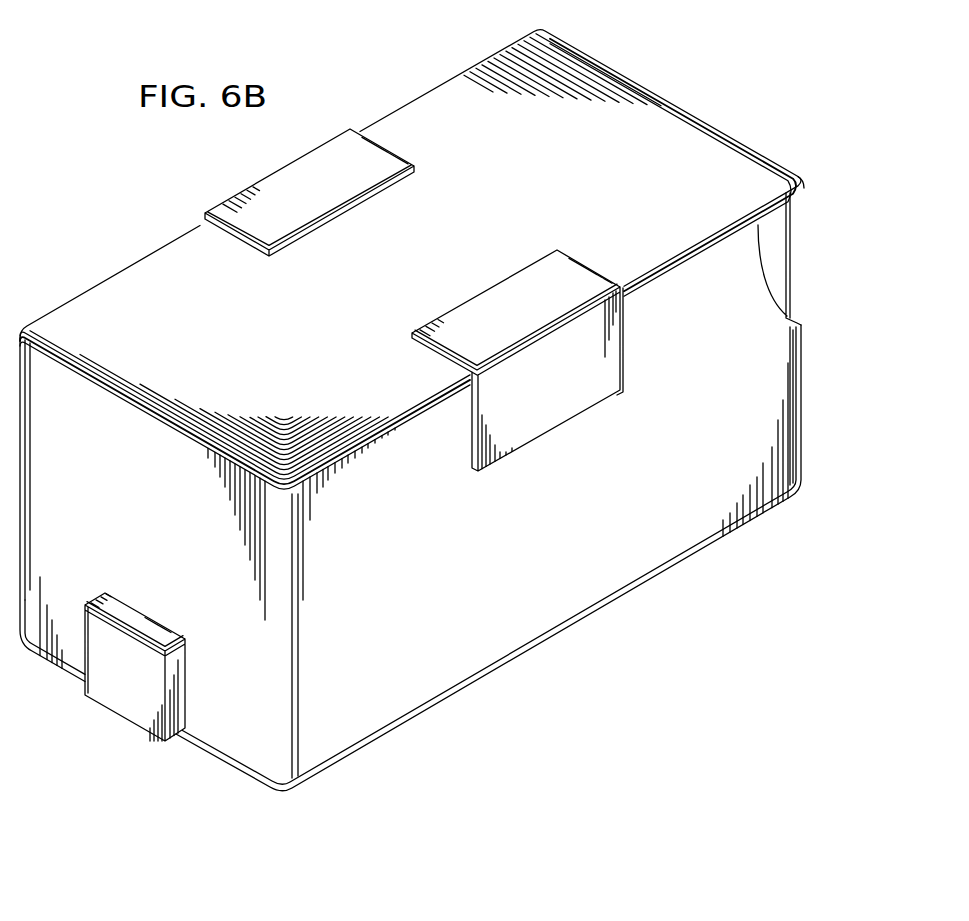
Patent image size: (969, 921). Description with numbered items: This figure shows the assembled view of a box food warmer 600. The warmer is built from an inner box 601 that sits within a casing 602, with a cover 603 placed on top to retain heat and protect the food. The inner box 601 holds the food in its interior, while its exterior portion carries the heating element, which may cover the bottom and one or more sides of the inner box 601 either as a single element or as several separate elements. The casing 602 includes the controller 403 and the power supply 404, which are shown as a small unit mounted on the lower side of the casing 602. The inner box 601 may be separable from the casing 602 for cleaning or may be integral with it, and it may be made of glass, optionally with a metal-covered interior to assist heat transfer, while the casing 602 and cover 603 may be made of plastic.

The box food warmer 600 is at (778, 88).
The inner box 601 is at (790, 258).
The casing 602 is at (803, 397).
The cover 603 is at (130, 272).
The controller 403 is at (101, 669).
The power supply 404 is at (128, 712).